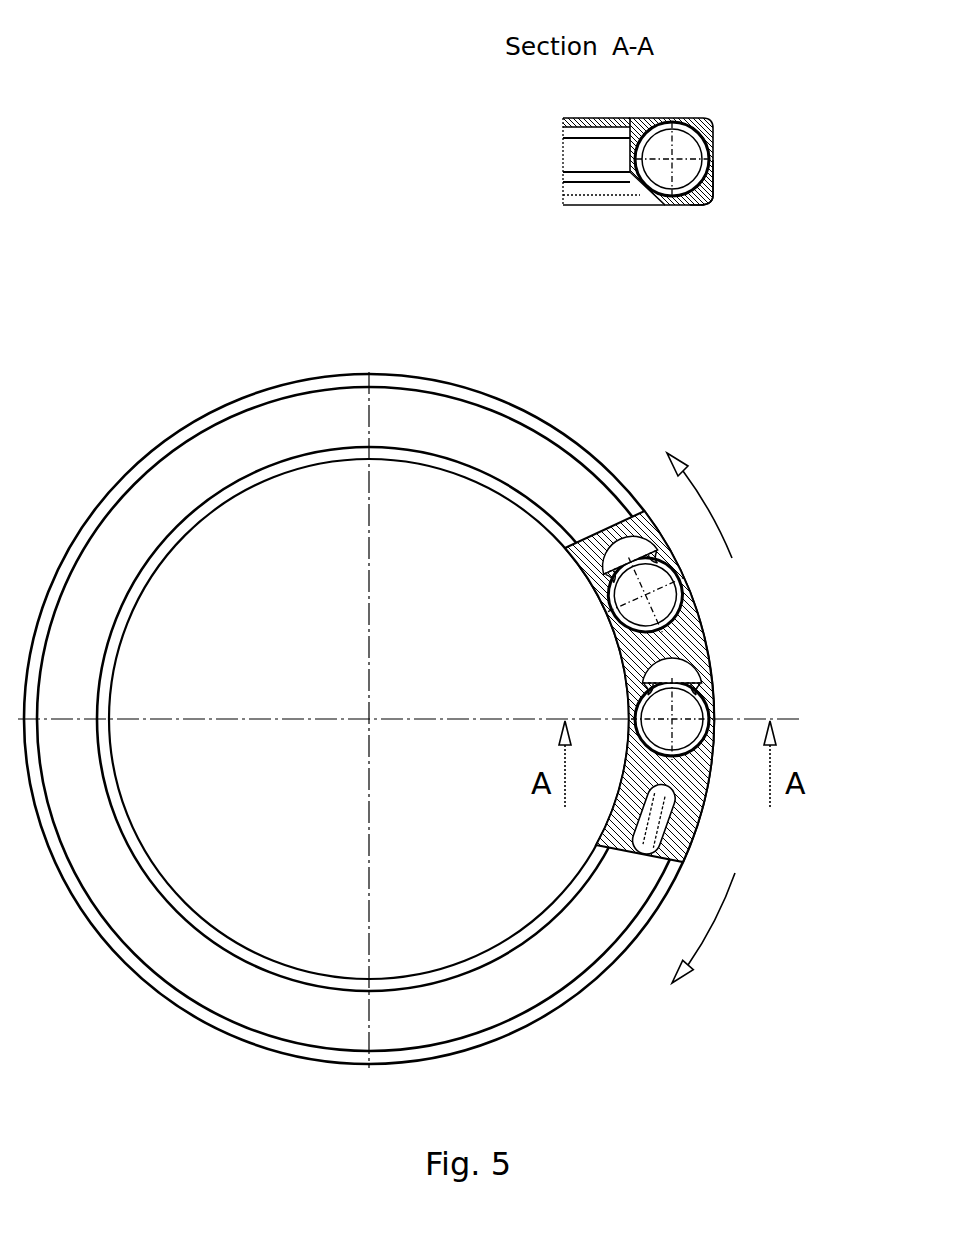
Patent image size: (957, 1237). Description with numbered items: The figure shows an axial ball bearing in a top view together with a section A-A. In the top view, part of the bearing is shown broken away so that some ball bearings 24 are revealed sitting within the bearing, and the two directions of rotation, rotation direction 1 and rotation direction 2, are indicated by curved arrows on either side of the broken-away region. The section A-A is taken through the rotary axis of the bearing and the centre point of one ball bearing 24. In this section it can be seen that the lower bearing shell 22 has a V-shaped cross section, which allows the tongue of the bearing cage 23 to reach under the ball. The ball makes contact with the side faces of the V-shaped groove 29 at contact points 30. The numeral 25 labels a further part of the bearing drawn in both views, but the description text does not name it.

The rotation direction 1 is at (716, 928).
The rotation direction 2 is at (714, 505).
The lower bearing shell 22 is at (708, 198).
The bearing cage 23 is at (714, 146).
The ball bearing 24 is at (708, 170).
The housing 25 is at (707, 648).
The V-shaped groove 29 is at (668, 206).
The contact points 30 is at (640, 206).